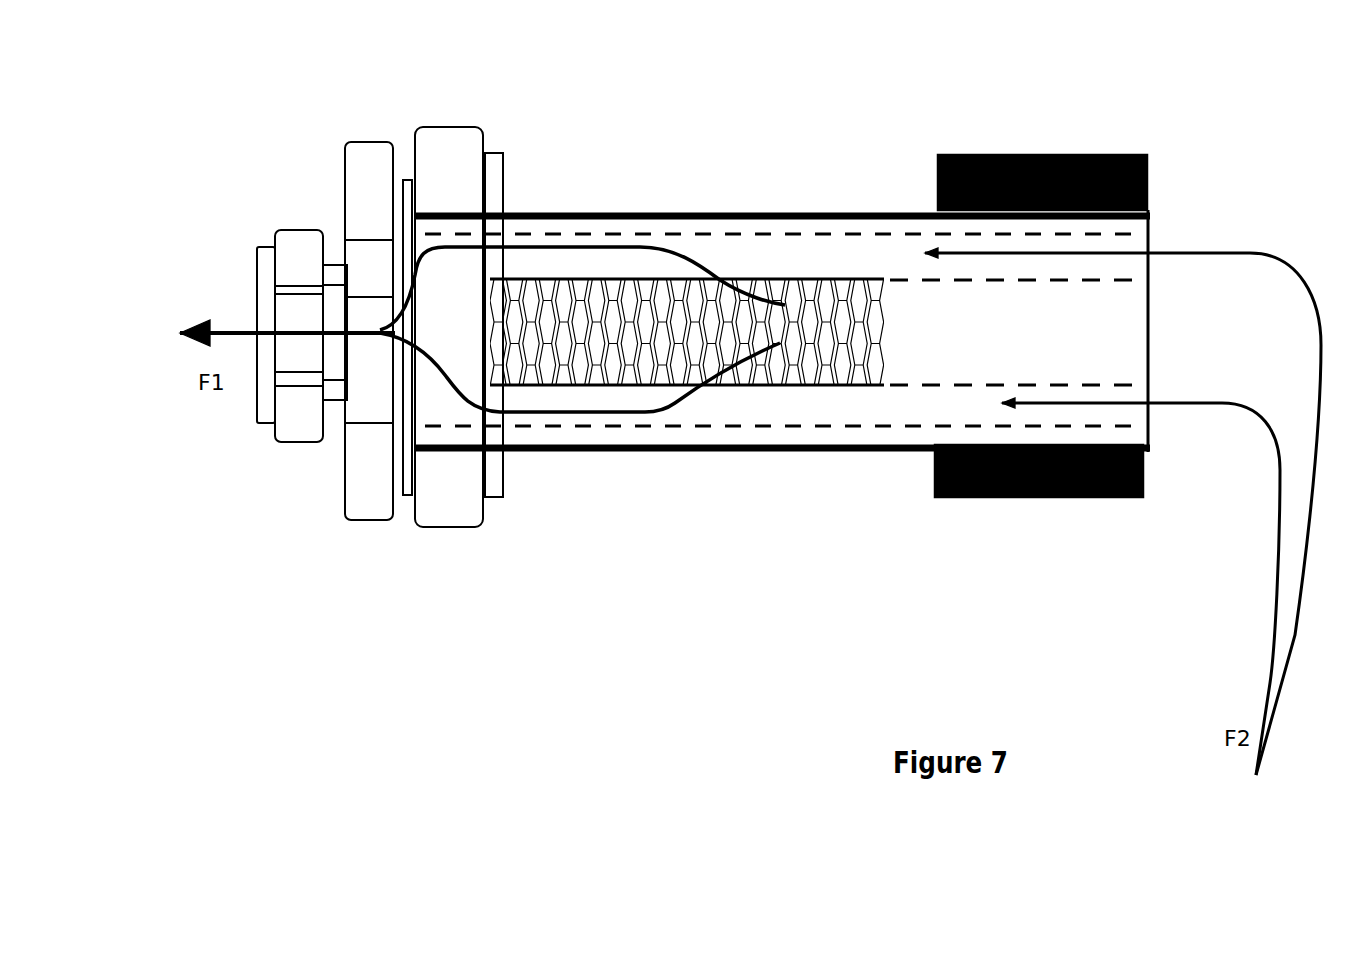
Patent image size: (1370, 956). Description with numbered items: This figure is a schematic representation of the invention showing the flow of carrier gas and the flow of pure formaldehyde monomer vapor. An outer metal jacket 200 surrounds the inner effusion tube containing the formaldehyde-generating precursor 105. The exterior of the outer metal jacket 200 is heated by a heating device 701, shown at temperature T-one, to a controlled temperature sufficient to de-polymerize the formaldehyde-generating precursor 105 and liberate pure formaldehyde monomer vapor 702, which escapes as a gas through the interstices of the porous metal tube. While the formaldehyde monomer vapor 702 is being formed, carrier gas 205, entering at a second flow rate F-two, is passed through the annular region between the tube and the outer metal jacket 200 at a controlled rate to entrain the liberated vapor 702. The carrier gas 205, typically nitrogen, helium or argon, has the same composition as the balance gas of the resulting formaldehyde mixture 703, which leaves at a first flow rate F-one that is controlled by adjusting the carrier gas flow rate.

The outer metal jacket 200 is at (587, 202).
The heating device 701 is at (1041, 304).
The formaldehyde monomer vapor 702 is at (802, 402).
The formaldehyde mixture 703 is at (449, 329).
The carrier gas 205 is at (1123, 508).
The formaldehyde-generating precursor 105 is at (1051, 331).